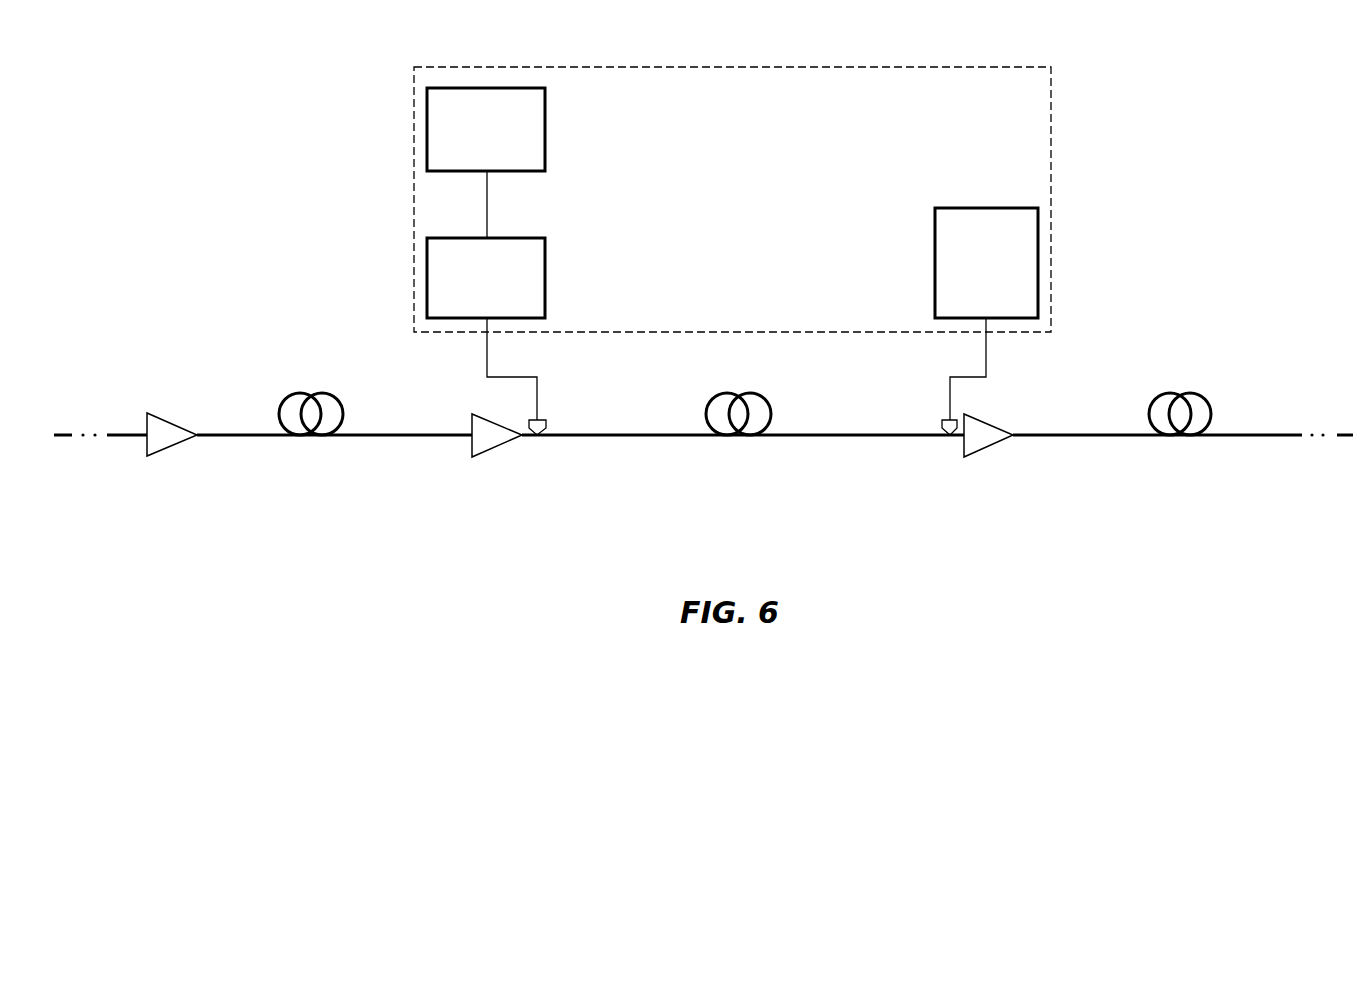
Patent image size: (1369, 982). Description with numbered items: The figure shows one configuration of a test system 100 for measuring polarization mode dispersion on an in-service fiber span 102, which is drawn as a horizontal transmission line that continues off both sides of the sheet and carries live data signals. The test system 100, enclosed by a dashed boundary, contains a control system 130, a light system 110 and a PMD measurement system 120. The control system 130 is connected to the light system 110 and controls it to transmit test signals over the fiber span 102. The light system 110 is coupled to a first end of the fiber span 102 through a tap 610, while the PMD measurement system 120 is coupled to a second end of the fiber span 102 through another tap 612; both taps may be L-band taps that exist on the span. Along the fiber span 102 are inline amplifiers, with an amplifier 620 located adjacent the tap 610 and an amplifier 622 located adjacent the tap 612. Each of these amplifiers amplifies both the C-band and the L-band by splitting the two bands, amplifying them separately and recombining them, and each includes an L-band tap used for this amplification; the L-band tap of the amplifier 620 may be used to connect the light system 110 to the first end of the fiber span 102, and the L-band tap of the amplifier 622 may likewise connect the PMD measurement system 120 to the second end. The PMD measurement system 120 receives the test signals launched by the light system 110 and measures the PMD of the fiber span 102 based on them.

The test system 100 is at (732, 199).
The control system 130 is at (486, 163).
The light system 110 is at (486, 278).
The PMD measurement system 120 is at (986, 263).
The tap 610 is at (548, 422).
The tap 612 is at (940, 425).
The amplifier 620 is at (482, 450).
The amplifier 622 is at (983, 450).
The fiber span 102 is at (734, 460).